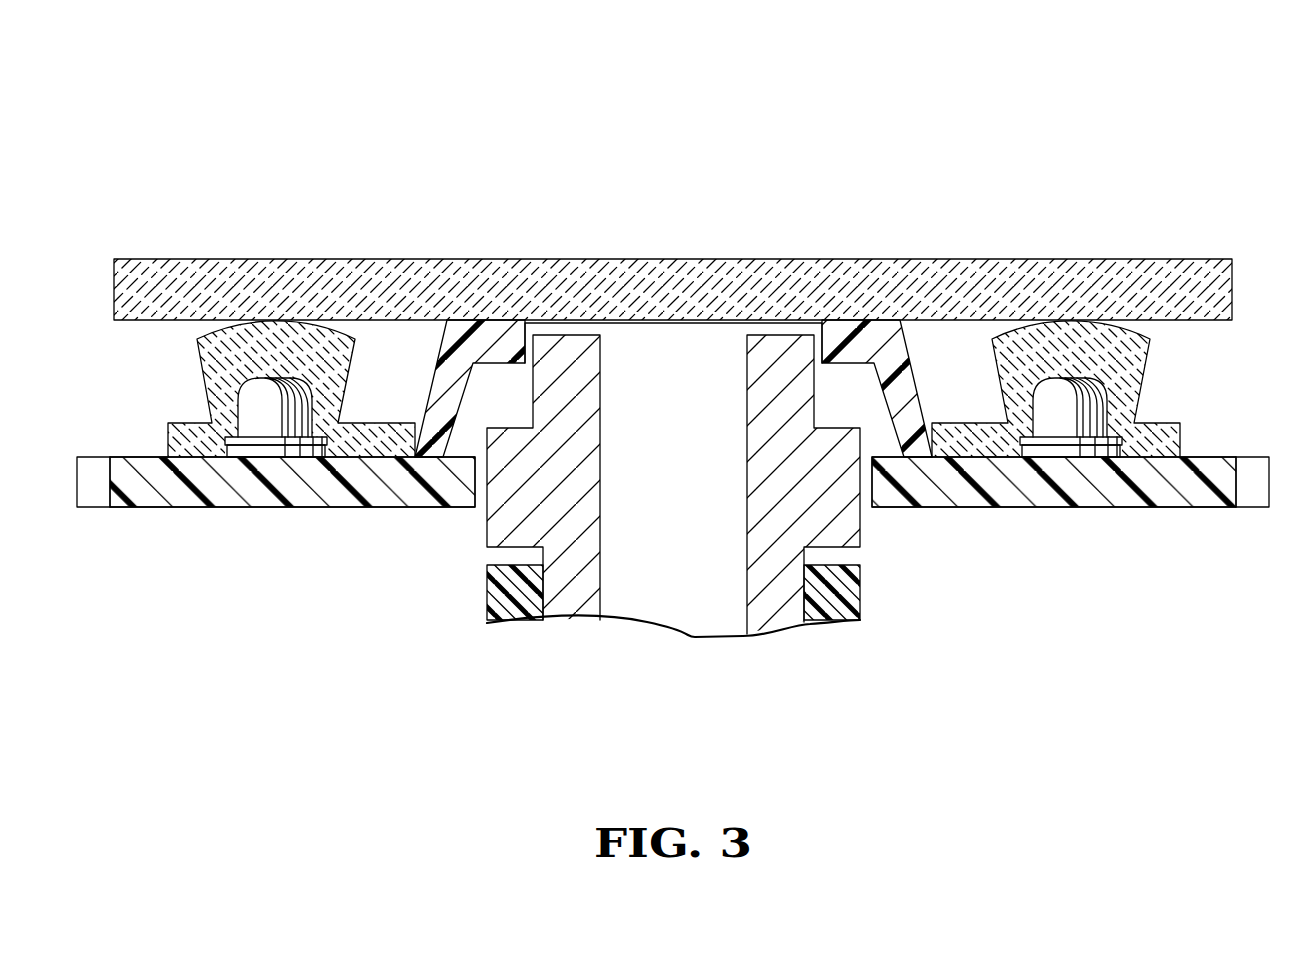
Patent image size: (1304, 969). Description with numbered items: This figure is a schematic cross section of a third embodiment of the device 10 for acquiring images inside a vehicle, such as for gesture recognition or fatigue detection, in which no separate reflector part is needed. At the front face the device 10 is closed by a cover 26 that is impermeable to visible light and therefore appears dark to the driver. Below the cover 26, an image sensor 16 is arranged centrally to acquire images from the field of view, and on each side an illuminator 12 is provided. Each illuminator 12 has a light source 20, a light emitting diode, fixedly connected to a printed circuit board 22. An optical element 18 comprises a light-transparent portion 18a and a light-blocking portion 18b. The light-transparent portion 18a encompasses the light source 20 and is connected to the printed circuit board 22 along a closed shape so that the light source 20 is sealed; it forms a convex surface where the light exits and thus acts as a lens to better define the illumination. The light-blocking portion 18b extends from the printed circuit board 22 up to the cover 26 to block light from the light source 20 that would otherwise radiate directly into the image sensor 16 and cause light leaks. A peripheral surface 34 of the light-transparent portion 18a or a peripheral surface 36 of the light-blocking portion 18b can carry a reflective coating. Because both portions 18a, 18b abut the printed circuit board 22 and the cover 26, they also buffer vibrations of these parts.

The device 10 is at (1240, 173).
The illuminator 12 is at (265, 503).
The image sensor 16 is at (672, 597).
The optical element 18 is at (672, 293).
The light-transparent portion 18a is at (298, 357).
The light-blocking portion 18b is at (462, 335).
The light source 20 is at (278, 423).
The printed circuit board 22 is at (388, 493).
The cover 26 is at (748, 305).
The peripheral surface of the light-transparent portion 34 is at (200, 372).
The peripheral surface of the light-blocking portion 36 is at (430, 377).